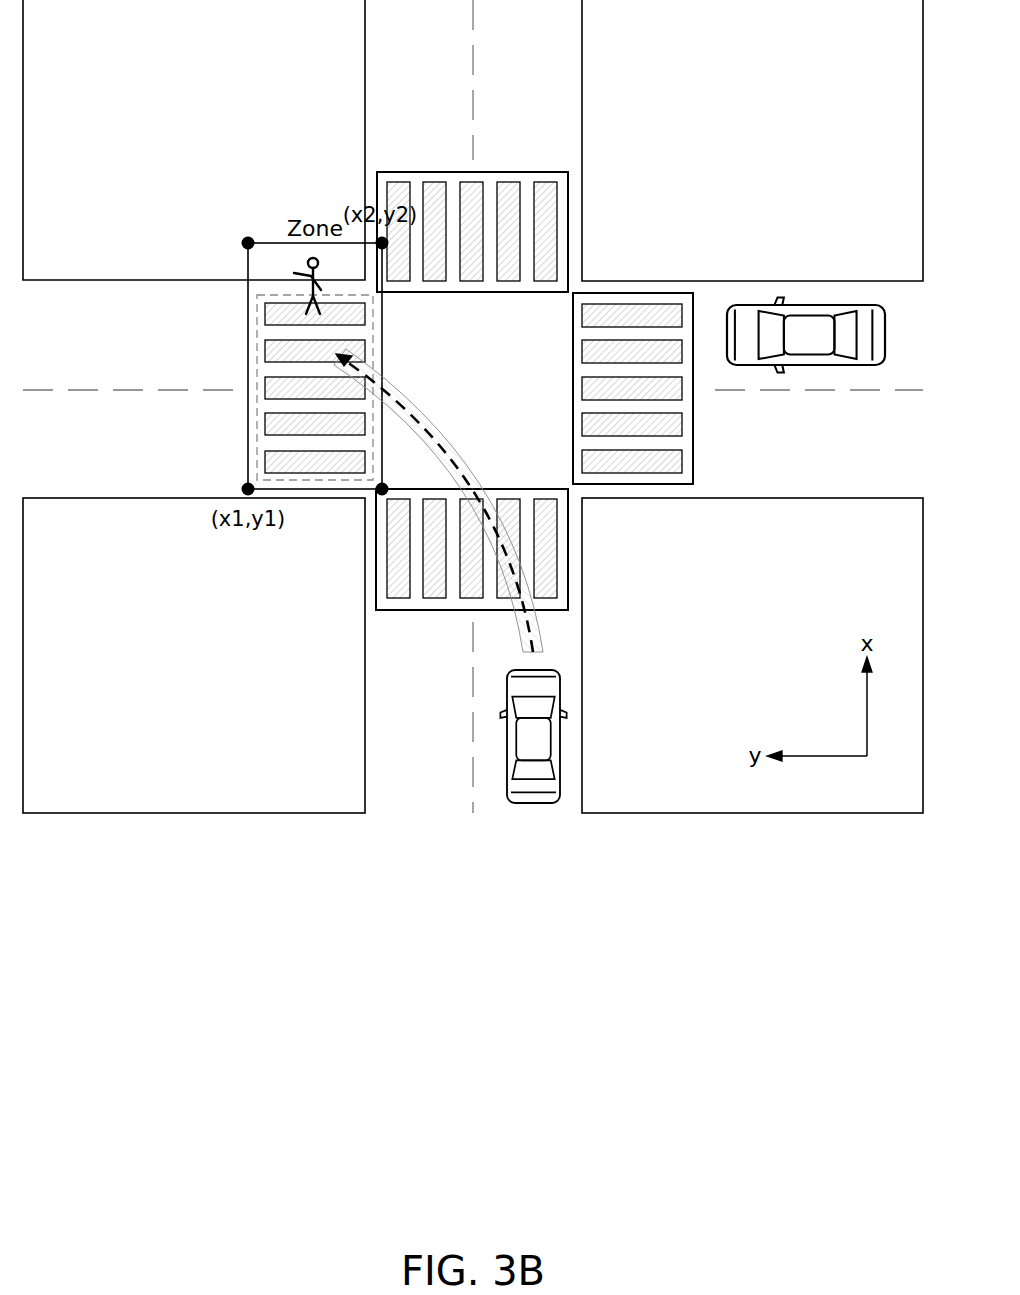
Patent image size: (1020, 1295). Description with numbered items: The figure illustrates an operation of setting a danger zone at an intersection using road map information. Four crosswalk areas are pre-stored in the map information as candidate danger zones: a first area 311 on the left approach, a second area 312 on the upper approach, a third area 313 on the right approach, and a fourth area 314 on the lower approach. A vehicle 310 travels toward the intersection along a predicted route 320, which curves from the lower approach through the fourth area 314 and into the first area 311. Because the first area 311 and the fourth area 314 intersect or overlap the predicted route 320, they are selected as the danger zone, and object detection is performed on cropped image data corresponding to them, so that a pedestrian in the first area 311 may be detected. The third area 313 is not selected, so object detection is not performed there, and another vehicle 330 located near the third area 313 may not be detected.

The vehicle 310 is at (535, 805).
The first area 311 is at (247, 337).
The second area 312 is at (497, 172).
The third area 313 is at (622, 292).
The fourth area 314 is at (497, 485).
The predicted route 320 is at (438, 420).
The another vehicle 330 is at (817, 315).